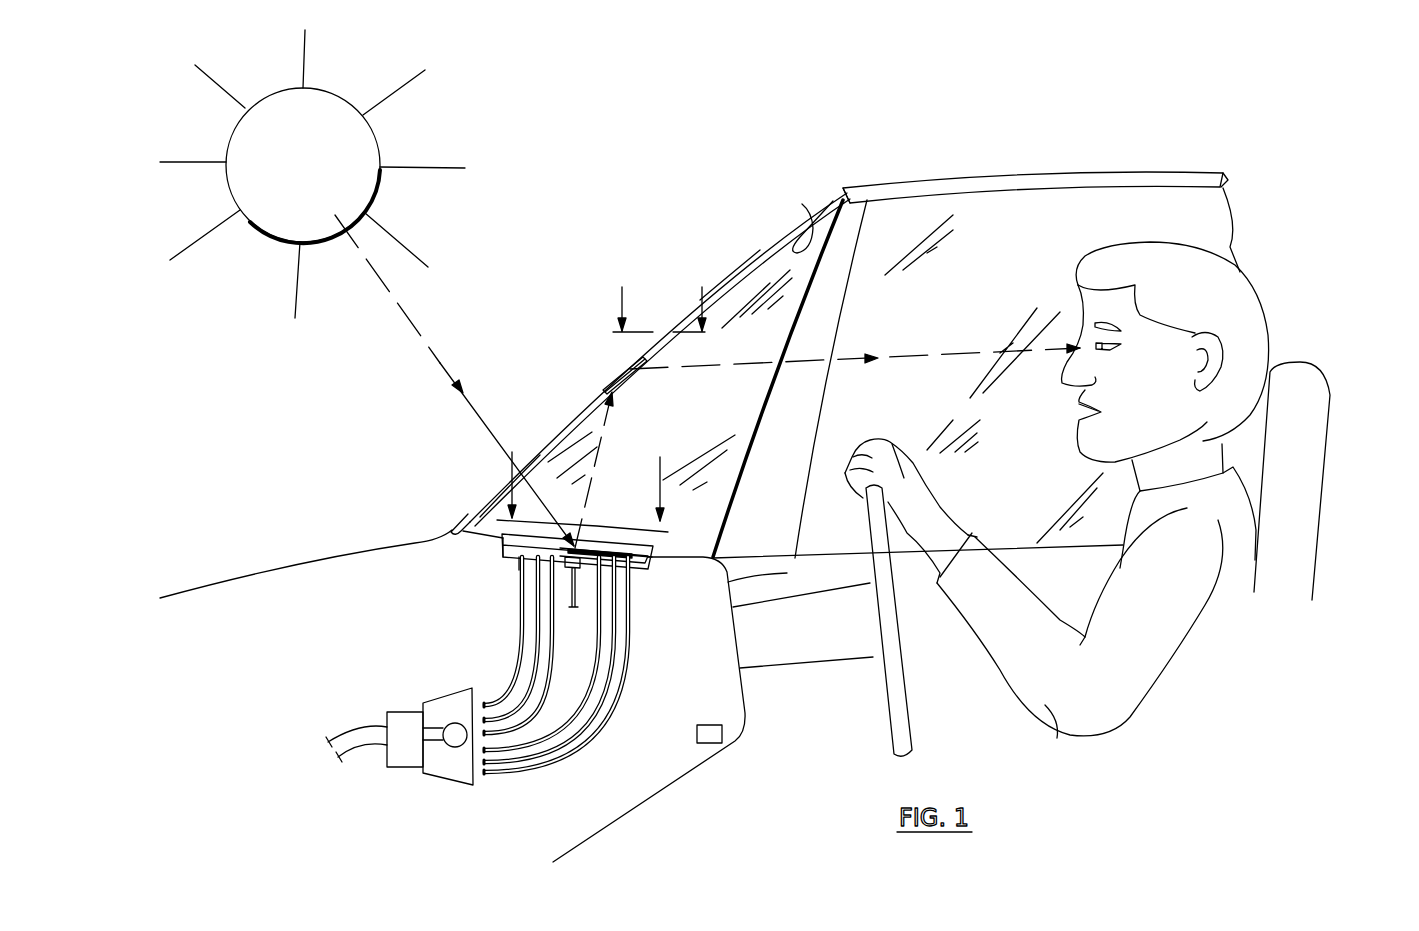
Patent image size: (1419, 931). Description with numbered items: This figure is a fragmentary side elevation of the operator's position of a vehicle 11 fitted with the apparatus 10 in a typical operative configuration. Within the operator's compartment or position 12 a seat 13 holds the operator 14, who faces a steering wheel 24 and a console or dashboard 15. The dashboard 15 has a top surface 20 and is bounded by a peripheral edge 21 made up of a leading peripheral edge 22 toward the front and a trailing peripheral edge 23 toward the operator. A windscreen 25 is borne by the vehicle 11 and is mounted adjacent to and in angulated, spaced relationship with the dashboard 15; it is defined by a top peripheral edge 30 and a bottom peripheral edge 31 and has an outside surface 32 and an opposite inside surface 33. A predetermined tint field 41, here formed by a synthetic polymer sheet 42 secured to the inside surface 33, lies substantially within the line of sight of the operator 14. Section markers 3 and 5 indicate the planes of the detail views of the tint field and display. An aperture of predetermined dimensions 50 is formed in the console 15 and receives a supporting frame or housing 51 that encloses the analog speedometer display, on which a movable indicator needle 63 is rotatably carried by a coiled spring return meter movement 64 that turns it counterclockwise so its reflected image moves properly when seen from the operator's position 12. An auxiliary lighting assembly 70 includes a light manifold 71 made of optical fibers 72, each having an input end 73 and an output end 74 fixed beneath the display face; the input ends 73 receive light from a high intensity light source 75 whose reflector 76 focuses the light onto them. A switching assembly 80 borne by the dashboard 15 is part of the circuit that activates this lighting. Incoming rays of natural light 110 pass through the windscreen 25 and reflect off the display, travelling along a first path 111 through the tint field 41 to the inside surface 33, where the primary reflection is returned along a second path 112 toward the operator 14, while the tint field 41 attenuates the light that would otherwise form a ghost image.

The section line 3- 3 is at (662, 295).
The section line 5- 5 is at (584, 476).
The apparatus 10 is at (460, 582).
The vehicle 11 is at (938, 172).
The operator's compartment or position 12 is at (966, 280).
The seat 13 is at (1313, 388).
The operator 14 is at (1230, 297).
The console or dashboard 15 is at (673, 627).
The top surface 20 is at (713, 555).
The peripheral edge 21 is at (769, 573).
The leading peripheral edge 22 is at (473, 512).
The trailing peripheral edge 23 is at (717, 558).
The steering wheel 24 is at (820, 630).
The windscreen 25 is at (752, 250).
The top peripheral edge 30 is at (838, 200).
The bottom peripheral edge 31 is at (456, 530).
The outside surface 32 is at (740, 264).
The inside surface 33 is at (814, 222).
The predetermined tint field 41 is at (635, 377).
The synthetic polymer sheet 42 is at (620, 381).
The aperture of predetermined dimensions 50 is at (503, 552).
The supporting frame or housing 51 is at (650, 563).
The movable indicator needle 63 is at (606, 548).
The coiled spring return meter movement 64 is at (577, 568).
The auxiliary lighting assembly 70 is at (561, 701).
The light manifold 71 is at (514, 662).
The optical fiber 72 is at (615, 688).
The input end 73 is at (487, 777).
The output end 74 is at (523, 565).
The high intensity light source 75 is at (398, 768).
The reflector 76 is at (453, 770).
The switching assembly 80 is at (708, 735).
The incoming rays of natural light 110 is at (445, 348).
The first path 111 is at (603, 440).
The second path 112 is at (725, 362).